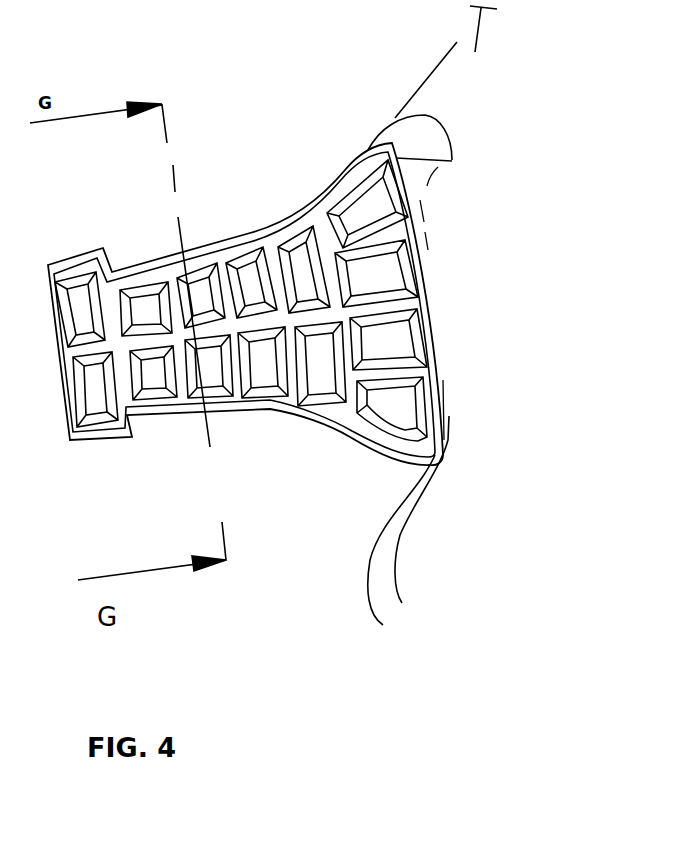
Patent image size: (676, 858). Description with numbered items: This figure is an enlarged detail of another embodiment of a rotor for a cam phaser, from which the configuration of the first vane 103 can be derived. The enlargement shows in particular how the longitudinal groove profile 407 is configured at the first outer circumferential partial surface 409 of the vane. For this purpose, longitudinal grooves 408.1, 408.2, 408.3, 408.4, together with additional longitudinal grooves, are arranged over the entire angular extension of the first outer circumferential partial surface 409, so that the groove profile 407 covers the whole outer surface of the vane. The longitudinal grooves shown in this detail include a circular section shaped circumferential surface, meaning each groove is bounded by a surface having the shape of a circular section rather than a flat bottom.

The first vane 103 is at (278, 144).
The longitudinal groove profile 407 is at (437, 292).
The longitudinal groove 408.1 is at (452, 161).
The longitudinal groove 408.2 is at (427, 187).
The longitudinal groove 408.3 is at (423, 213).
The longitudinal groove 408.4 is at (425, 240).
The first outer circumferential partial surface 409 is at (446, 385).